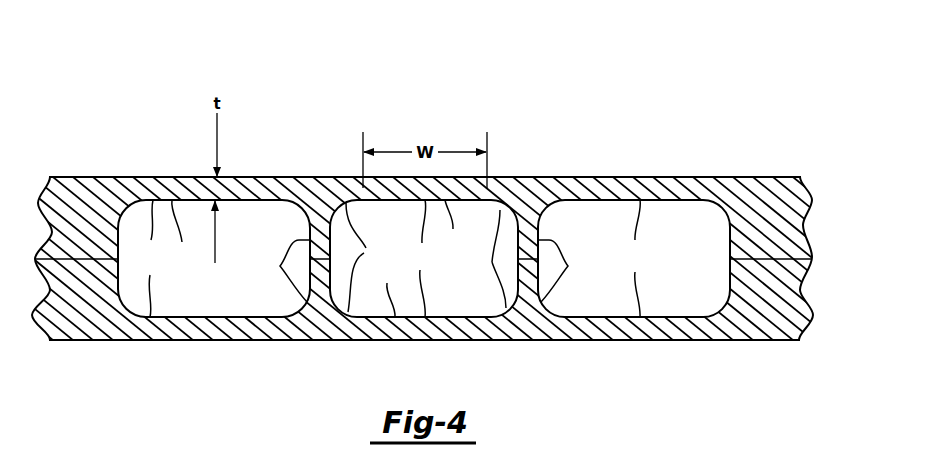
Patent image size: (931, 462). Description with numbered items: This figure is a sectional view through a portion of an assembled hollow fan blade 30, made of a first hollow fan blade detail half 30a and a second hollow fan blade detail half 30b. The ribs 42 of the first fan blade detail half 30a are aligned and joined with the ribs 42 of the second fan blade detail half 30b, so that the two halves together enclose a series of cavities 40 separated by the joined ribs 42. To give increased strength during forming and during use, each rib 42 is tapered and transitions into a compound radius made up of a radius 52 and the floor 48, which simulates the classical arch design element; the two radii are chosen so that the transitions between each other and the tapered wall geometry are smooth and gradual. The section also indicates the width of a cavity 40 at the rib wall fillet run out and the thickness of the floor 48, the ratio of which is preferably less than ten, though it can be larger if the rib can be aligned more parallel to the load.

The fan blade 30 is at (139, 105).
The first hollow fan blade detail half 30a is at (82, 185).
The second hollow fan blade detail half 30b is at (73, 341).
The cavity 40 is at (391, 258).
The rib 42 is at (280, 267).
The floor 48 is at (317, 258).
The radius 52 is at (366, 249).